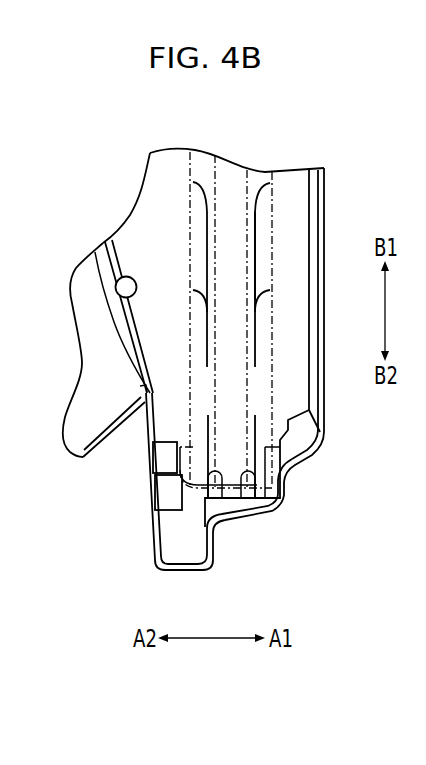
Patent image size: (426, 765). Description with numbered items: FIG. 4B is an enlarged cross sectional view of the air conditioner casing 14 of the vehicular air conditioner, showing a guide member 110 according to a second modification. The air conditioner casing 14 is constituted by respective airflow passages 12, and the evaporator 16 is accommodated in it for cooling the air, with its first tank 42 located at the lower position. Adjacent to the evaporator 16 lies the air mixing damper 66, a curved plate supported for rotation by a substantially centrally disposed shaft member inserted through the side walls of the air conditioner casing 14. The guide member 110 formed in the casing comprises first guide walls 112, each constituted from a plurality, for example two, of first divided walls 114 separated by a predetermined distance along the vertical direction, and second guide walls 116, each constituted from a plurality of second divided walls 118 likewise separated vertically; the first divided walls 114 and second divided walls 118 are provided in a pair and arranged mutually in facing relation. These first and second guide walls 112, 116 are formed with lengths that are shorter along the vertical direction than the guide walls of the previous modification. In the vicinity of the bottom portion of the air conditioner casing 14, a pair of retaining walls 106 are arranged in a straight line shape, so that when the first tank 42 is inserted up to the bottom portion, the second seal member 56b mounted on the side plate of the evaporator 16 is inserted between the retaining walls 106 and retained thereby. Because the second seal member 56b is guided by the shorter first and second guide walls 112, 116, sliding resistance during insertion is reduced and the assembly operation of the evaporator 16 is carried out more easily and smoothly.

The airflow passage 12 is at (94, 331).
The air conditioner casing 14 is at (314, 485).
The evaporator 16 is at (176, 176).
The first tank 42 is at (152, 455).
The second seal member 56b is at (233, 383).
The air mixing damper 66 is at (103, 262).
The retaining walls 106 is at (252, 478).
The guide member 110 is at (257, 180).
The first guide wall 112 is at (270, 240).
The first divided wall 114 is at (253, 253).
The second guide wall 116 is at (200, 242).
The second divided wall 118 is at (208, 253).